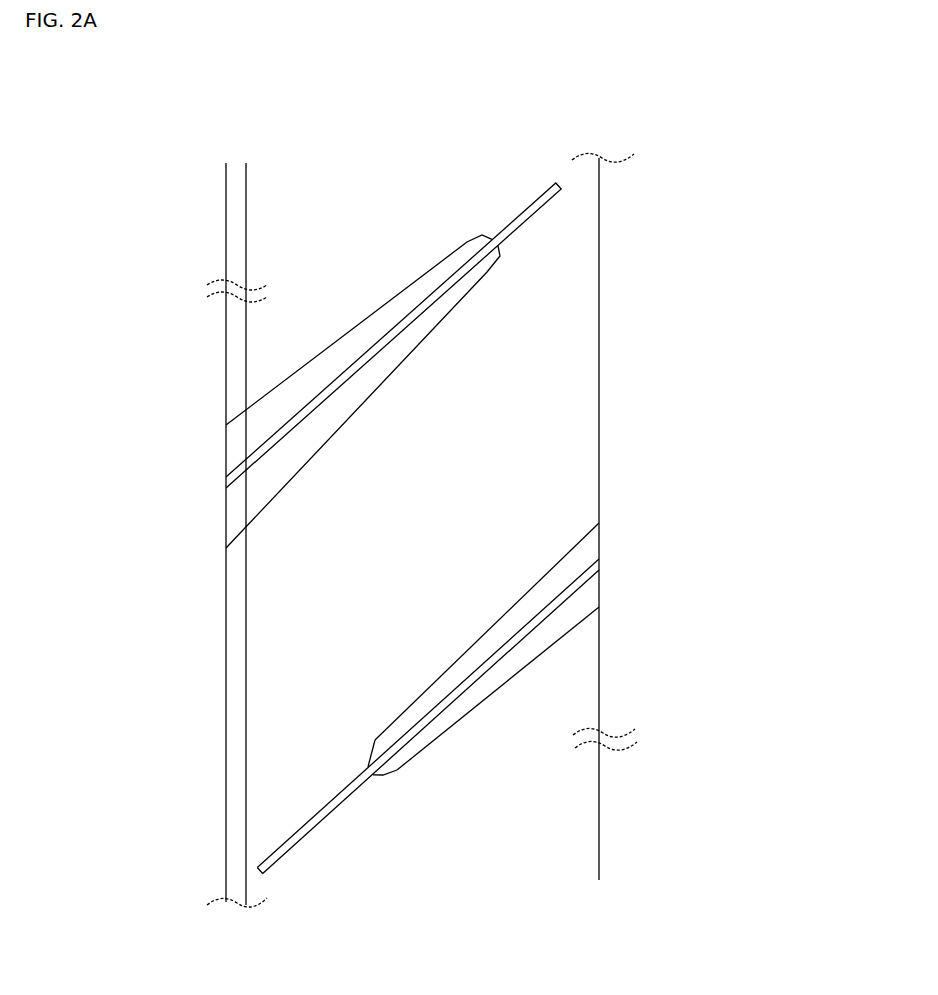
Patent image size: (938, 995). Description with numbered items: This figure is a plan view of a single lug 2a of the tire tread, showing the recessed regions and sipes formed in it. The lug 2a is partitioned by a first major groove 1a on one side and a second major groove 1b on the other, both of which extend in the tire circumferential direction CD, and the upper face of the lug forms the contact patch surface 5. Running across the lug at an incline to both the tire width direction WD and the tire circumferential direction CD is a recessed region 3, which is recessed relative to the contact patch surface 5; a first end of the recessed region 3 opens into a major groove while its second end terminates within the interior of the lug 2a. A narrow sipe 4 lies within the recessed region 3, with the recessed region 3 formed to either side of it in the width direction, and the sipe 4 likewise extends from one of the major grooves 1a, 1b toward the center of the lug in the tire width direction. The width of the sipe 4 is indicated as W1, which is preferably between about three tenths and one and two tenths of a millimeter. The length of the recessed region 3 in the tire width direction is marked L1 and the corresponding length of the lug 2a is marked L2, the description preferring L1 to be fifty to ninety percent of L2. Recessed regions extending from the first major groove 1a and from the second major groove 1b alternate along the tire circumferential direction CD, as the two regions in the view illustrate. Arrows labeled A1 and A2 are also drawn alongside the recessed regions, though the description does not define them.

The first major groove 1a is at (640, 393).
The second major groove 1b is at (208, 698).
The lug 2a is at (377, 185).
The recessed region 3 is at (272, 499).
The sipe 4 is at (528, 207).
The contact patch surface 5 is at (412, 559).
The first direction A1 is at (280, 370).
The second direction A2 is at (452, 247).
The width of sipe W1 is at (270, 830).
The length in the tire width direction of recessed region L1 is at (364, 792).
The length in the tire width direction of lug L2 is at (599, 900).
The tire circumferential direction CD is at (761, 580).
The tire width direction WD is at (862, 890).